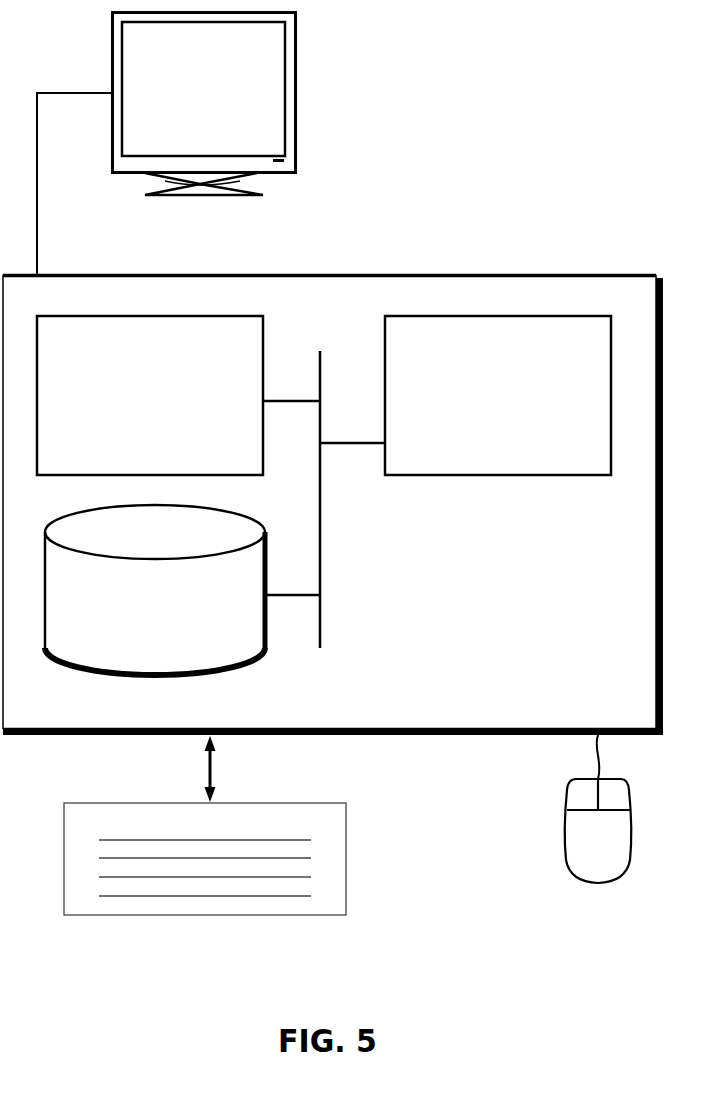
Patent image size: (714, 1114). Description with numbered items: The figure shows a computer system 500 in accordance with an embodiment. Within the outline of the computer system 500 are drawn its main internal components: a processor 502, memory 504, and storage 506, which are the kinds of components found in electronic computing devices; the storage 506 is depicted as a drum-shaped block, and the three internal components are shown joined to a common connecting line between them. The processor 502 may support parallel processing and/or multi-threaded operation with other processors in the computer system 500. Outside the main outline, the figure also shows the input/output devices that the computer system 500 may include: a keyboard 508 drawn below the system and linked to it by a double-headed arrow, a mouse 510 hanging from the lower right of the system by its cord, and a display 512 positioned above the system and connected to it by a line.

The computer system 500 is at (373, 242).
The processor 502 is at (523, 410).
The memory 504 is at (173, 406).
The storage 506 is at (178, 618).
The keyboard 508 is at (205, 843).
The mouse 510 is at (619, 852).
The display 512 is at (166, 144).